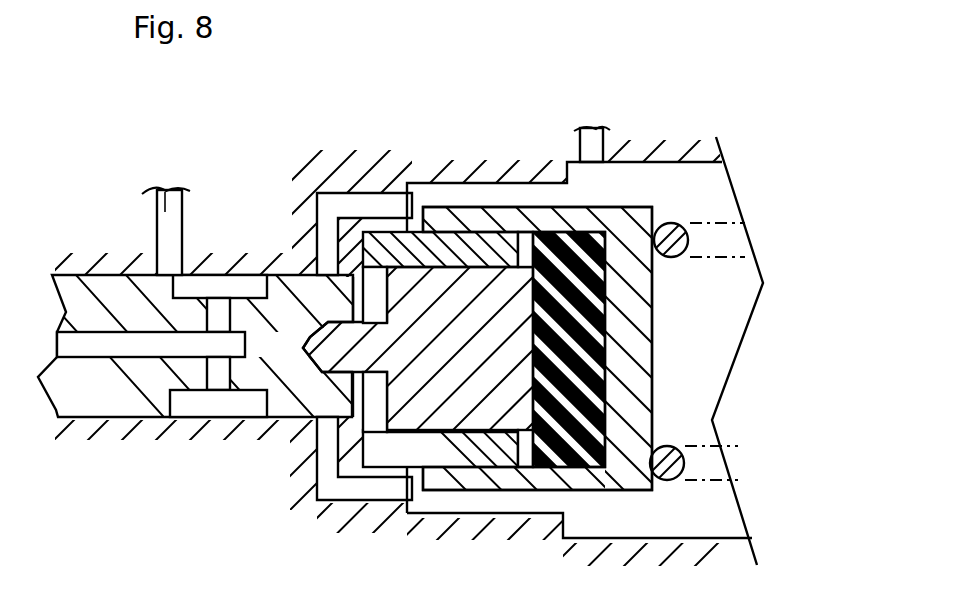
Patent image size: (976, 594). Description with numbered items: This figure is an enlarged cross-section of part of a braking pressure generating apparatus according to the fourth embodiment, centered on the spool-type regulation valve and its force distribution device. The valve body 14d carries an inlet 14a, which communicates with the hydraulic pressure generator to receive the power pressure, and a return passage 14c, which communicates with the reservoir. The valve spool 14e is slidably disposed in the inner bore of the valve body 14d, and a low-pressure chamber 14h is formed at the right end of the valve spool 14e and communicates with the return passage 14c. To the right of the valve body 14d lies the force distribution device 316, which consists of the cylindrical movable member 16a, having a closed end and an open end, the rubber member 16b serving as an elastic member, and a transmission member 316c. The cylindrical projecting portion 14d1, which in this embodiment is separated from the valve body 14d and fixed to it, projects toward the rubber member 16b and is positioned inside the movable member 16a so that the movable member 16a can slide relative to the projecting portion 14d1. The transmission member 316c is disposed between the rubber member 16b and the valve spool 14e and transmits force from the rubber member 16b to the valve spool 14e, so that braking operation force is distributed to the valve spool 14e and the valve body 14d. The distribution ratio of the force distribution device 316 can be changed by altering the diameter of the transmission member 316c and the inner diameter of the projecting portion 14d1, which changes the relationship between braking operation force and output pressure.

The valve body 14d is at (339, 297).
The inlet 14a is at (151, 182).
The valve spool 14e is at (100, 393).
The cylindrical projecting portion 14d1 is at (447, 297).
The return passage 14c is at (556, 118).
The low-pressure chamber 14h is at (564, 293).
The movable member 16a is at (488, 297).
The rubber member 16b is at (511, 297).
The transmission member 316c is at (640, 297).
The force distribution device 316 is at (634, 506).